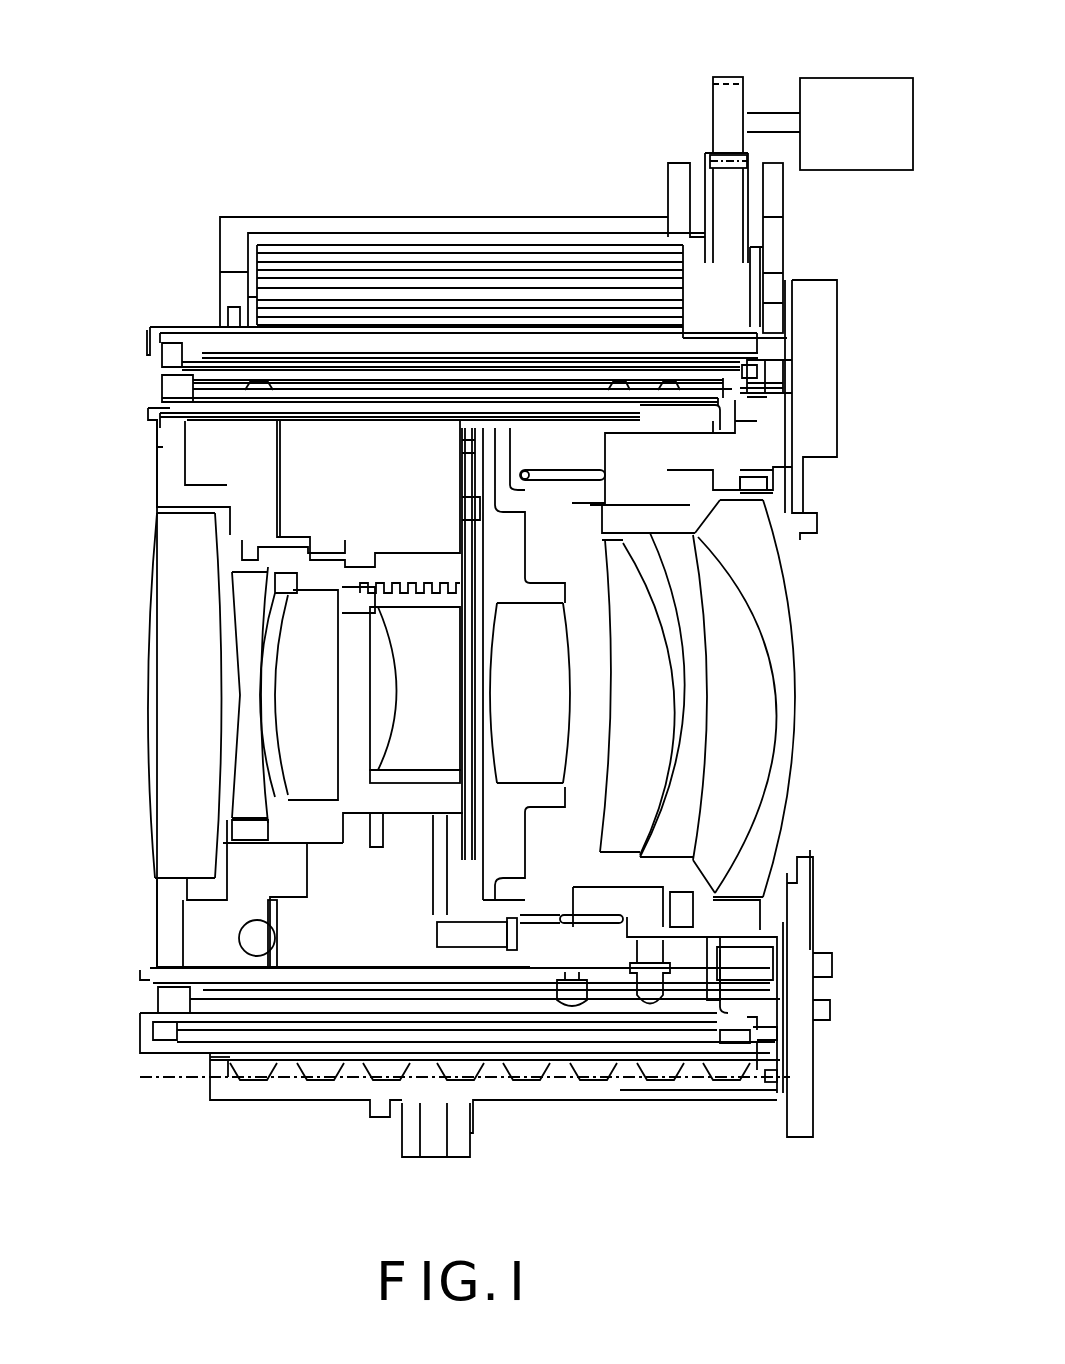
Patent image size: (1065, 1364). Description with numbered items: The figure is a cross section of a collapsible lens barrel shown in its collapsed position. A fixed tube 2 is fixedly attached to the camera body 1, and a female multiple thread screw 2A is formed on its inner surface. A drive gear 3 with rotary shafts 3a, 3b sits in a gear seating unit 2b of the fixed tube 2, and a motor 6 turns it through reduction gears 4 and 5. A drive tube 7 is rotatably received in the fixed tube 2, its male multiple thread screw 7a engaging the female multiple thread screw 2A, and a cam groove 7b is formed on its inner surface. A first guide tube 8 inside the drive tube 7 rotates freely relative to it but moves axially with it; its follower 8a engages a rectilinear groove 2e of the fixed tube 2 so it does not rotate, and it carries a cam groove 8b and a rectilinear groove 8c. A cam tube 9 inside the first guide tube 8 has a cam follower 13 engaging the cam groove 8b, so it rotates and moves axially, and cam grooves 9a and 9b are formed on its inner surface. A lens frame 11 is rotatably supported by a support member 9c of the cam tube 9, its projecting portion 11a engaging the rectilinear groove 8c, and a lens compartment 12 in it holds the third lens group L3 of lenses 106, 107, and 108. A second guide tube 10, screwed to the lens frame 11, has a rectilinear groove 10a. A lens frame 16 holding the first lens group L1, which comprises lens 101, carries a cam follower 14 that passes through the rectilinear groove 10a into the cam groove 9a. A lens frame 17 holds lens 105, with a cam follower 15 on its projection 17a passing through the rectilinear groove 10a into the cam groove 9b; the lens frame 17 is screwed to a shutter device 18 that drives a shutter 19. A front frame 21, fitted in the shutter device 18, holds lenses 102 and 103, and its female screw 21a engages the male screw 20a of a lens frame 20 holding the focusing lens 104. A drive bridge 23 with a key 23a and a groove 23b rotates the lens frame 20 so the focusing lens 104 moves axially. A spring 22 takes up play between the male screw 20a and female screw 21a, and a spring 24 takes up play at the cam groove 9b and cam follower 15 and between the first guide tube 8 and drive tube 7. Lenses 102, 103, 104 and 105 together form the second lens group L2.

The camera body 1 is at (823, 368).
The fixed tube 2 is at (273, 1083).
The female multiple thread screw 2A is at (251, 1068).
The gear seating unit 2b is at (375, 240).
The rectilinear groove 2e is at (595, 1080).
The drive gear 3 is at (490, 260).
The rotary shaft 3a is at (226, 282).
The rotary shaft 3b is at (788, 283).
The reduction gear 4 is at (713, 200).
The reduction gear 5 is at (718, 98).
The motor 6 is at (856, 78).
The drive tube 7 is at (203, 1040).
The male multiple thread screw 7a is at (698, 1077).
The cam groove 7b is at (735, 1035).
The first guide tube 8 is at (768, 1038).
The follower 8a is at (770, 1078).
The cam groove 8b is at (725, 1035).
The rectilinear groove 8c is at (742, 372).
The cam tube 9 is at (220, 1002).
The cam groove 9a is at (568, 1000).
The cam groove 9b is at (631, 1007).
The support member 9c is at (790, 381).
The second guide tube 10 is at (717, 1007).
The rectilinear groove 10a is at (355, 994).
The lens frame 11 is at (775, 428).
The projecting portion 11a is at (787, 374).
The lens compartment 12 is at (710, 490).
The cam follower 13 is at (713, 1048).
The cam follower 14 is at (576, 974).
The cam follower 15 is at (653, 987).
The lens frame 16 is at (156, 962).
The lens frame 17 is at (511, 836).
The projection 17a is at (531, 915).
The shutter device 18 is at (303, 870).
The shutter 19 is at (462, 706).
The lens frame 20 is at (343, 760).
The male screw 20a is at (378, 590).
The front frame 21 is at (323, 565).
The female screw 21a is at (408, 583).
The spring 22 is at (411, 780).
The drive bridge 23 is at (385, 815).
The key 23a is at (438, 822).
The groove 23b is at (363, 880).
The spring 24 is at (550, 468).
The lens 101 is at (76, 748).
The lens 102 is at (248, 600).
The lens 103 is at (299, 686).
The focusing lens 104 is at (391, 654).
The lens 105 is at (530, 693).
The lens 106 is at (632, 647).
The lens 107 is at (695, 602).
The lens 108 is at (771, 580).
The first lens group L1 is at (150, 722).
The second lens group L2 is at (252, 644).
The third lens group L3 is at (768, 748).